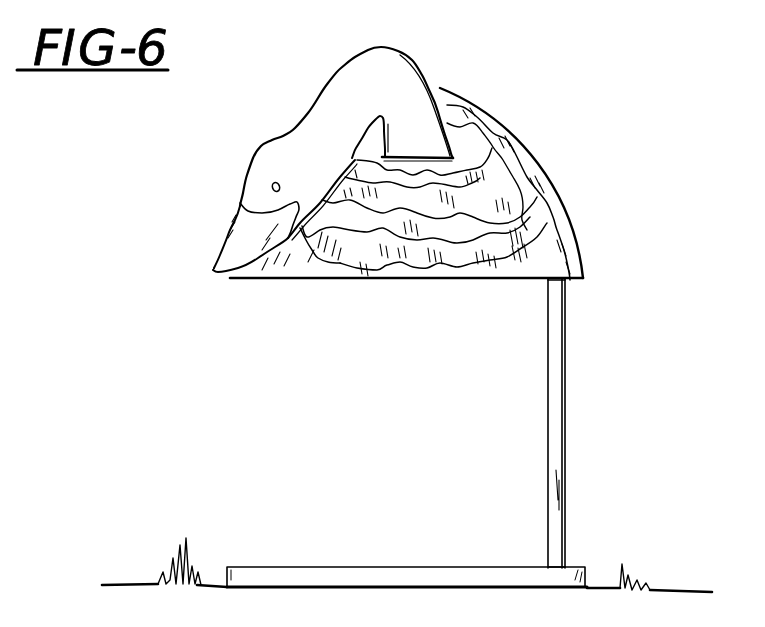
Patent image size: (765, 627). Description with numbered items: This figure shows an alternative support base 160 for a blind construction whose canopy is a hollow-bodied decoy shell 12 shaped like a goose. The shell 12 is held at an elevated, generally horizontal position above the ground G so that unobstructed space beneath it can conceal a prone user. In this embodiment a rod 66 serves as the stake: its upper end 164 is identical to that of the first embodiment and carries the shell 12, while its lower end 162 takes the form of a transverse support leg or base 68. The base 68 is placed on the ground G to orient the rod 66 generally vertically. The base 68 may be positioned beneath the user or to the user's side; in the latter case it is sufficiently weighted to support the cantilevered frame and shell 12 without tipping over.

The decoy shell 12 is at (527, 157).
The rod 66 is at (555, 407).
The transverse support leg or base 68 is at (317, 573).
The alternative support base 160 is at (567, 482).
The lower end 162 is at (563, 567).
The upper end 164 is at (557, 292).
The ground G is at (680, 592).